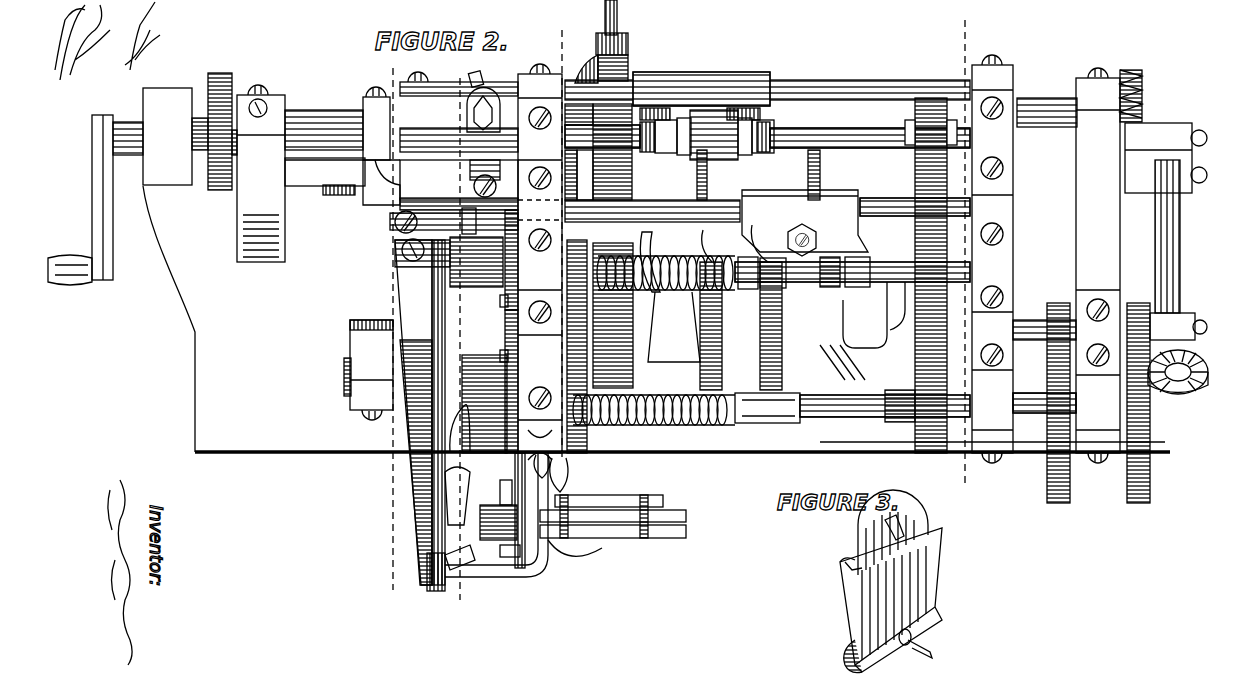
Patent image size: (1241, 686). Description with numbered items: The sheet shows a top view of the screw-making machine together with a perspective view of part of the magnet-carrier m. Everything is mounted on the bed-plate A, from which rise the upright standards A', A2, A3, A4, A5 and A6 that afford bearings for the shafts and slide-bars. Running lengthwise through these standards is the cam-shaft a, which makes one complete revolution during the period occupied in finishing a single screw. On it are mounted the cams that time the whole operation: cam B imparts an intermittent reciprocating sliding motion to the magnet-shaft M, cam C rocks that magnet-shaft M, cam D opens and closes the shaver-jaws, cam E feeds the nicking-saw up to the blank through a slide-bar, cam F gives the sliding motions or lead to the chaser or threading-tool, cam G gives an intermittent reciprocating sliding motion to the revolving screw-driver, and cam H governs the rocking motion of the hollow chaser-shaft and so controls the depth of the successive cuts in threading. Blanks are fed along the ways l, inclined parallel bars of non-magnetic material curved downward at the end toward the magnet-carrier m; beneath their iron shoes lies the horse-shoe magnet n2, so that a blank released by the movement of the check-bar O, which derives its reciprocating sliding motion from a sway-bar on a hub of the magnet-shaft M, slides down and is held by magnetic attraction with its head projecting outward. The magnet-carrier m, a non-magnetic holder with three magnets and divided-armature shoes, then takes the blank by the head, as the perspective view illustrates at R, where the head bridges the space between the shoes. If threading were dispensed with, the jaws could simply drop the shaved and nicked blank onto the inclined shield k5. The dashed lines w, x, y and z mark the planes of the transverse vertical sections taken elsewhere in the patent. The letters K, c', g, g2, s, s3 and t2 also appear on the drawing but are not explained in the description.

In FIG. 2, the bed-plate A is at (656, 306).
In FIG. 2, the upright standard A' is at (175, 136).
In FIG. 2, the upright standard A2 is at (261, 173).
In FIG. 2, the upright standard A3 is at (368, 370).
In FIG. 2, the upright standard A4 is at (540, 262).
In FIG. 2, the upright standard A5 is at (992, 259).
In FIG. 2, the upright standard A6 is at (1098, 265).
In FIG. 2, the magnet-shaft sliding cam B is at (842, 273).
In FIG. 2, the magnet-shaft rocking cam C is at (580, 301).
In FIG. 2, the shaver-jaw cam D is at (774, 275).
In FIG. 2, the nicker-saw cam E is at (874, 255).
In FIG. 2, the lead cam F is at (673, 256).
In FIG. 2, the screw-driver cam G is at (760, 270).
In FIG. 2, the chaser-shaft cam H is at (599, 246).
In FIG. 2, the collar K is at (568, 175).
In FIG. 2, the magnet-shaft M is at (682, 260).
In FIG. 2, the check-bar O is at (508, 374).
In FIG. 2, the cam-shaft a is at (856, 223).
In FIG. 2, the clamp screw c' is at (483, 98).
In FIG. 2, the shaft g is at (685, 138).
In FIG. 2, the shaft section g2 is at (331, 130).
In FIG. 2, the inclined shield k5 is at (459, 185).
In FIG. 2, the ways l is at (613, 516).
In FIG. 2, the magnet-carrier m is at (420, 412).
In FIG. 3, the magnet-carrier m is at (897, 581).
In FIG. 2, the horse-shoe magnet n2 is at (514, 522).
In FIG. 2, the lever s is at (476, 503).
In FIG. 2, the lever arm s3 is at (482, 557).
In FIG. 2, the shaft t2 is at (824, 407).
In FIG. 3, the blank held by the head R is at (915, 649).
In FIG. 2, the section line w w is at (391, 319).
In FIG. 2, the section line x x is at (467, 337).
In FIG. 2, the section line y y is at (559, 251).
In FIG. 2, the section line z z is at (967, 250).